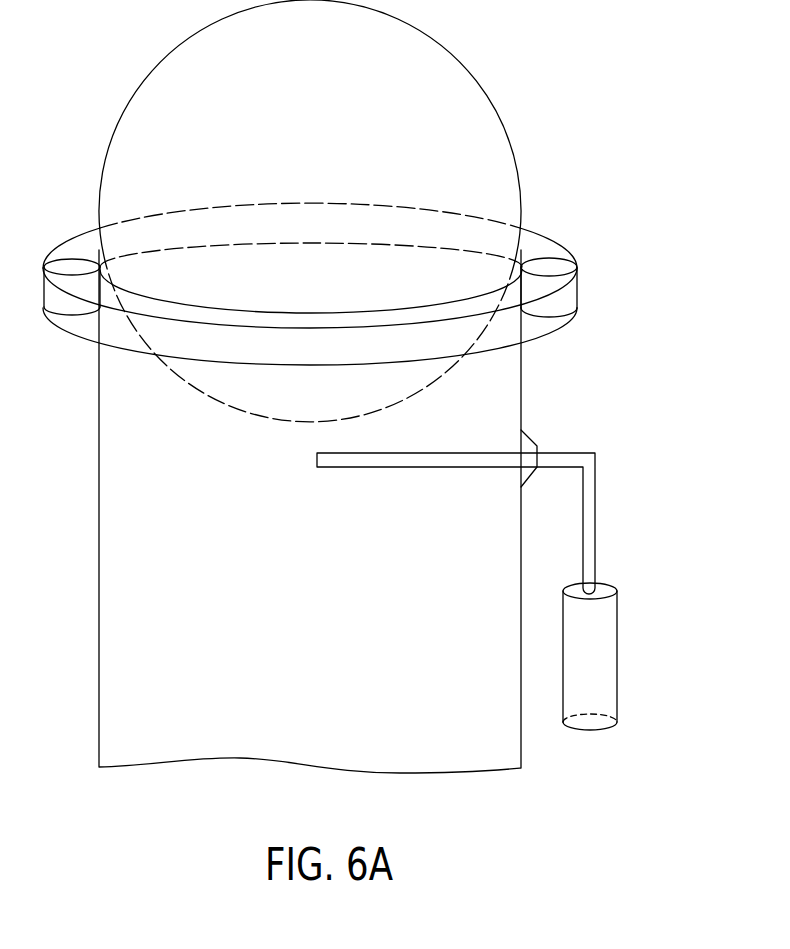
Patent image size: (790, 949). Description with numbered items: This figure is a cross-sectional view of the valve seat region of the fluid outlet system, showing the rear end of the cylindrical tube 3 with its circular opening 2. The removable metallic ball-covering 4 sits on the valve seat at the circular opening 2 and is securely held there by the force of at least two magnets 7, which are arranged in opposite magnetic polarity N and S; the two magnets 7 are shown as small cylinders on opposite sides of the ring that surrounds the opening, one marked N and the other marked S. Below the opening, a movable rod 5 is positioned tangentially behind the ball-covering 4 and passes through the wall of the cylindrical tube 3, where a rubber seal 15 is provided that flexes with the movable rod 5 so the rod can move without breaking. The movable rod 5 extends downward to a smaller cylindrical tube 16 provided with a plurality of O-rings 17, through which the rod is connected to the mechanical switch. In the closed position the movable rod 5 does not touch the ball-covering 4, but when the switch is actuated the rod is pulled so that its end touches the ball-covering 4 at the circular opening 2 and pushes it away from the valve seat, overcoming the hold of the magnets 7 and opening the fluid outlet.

The circular opening 2 is at (96, 230).
The cylindrical tube 3 is at (508, 398).
The removable metallic ball-covering 4 is at (508, 130).
The movable rod 5 is at (592, 522).
The magnets 7 is at (568, 273).
The rubber seal 15 is at (535, 444).
The cylindrical tube 16 is at (614, 649).
The O-rings 17 is at (602, 590).
The magnetic polarity N is at (63, 262).
The magnetic polarity S is at (560, 265).